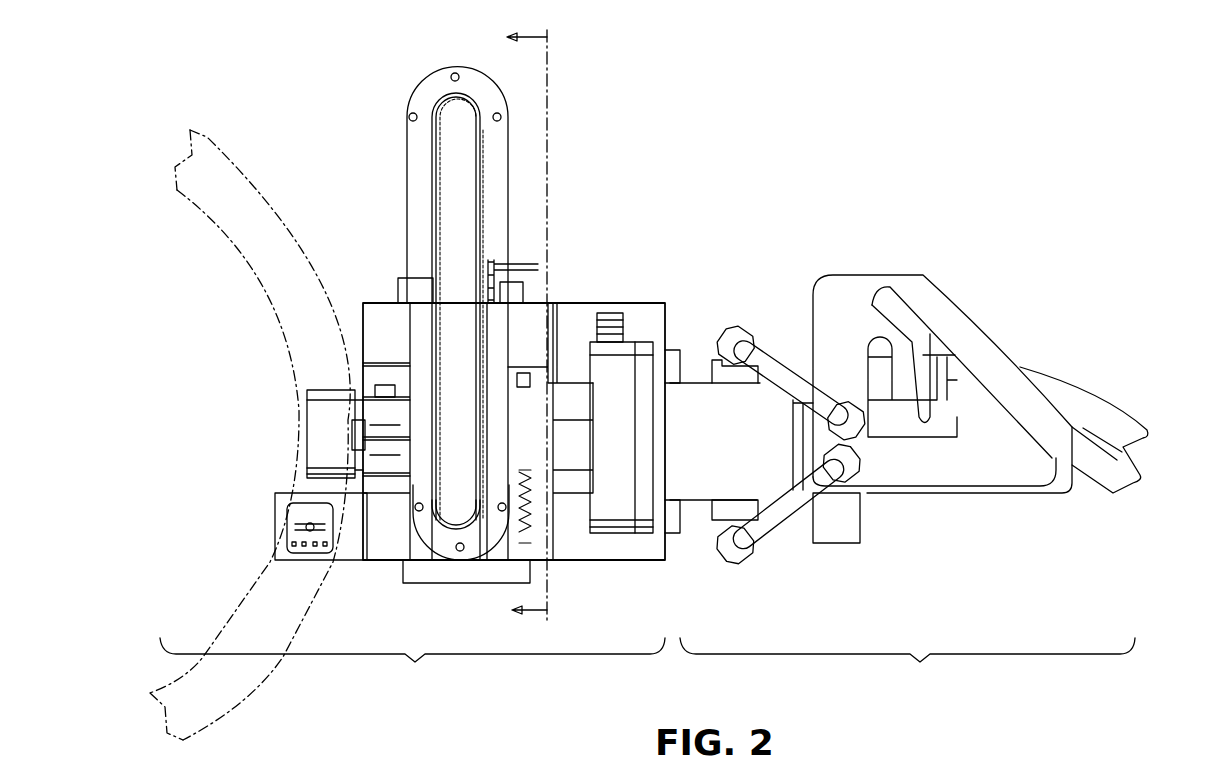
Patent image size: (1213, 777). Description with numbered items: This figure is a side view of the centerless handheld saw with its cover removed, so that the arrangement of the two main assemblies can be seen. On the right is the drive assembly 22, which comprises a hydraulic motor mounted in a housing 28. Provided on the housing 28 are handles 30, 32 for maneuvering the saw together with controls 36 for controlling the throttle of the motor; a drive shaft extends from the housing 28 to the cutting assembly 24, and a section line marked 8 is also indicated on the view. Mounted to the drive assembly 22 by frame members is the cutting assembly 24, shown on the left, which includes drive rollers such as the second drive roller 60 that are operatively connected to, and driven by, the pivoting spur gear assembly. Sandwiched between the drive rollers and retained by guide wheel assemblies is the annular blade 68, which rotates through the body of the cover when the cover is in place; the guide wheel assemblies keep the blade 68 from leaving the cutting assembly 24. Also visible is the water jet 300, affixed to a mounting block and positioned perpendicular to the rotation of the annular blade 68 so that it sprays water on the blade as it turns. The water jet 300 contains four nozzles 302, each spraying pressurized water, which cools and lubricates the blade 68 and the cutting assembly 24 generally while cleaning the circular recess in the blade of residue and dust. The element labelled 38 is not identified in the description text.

The section line 8- 8 is at (538, 325).
The drive assembly 22 is at (902, 528).
The cutting assembly 24 is at (420, 478).
The housing 28 is at (807, 423).
The handle 30 is at (432, 105).
The handle 32 is at (925, 277).
The controls 36 is at (923, 335).
The link rod 38 is at (700, 345).
The second drive roller 60 is at (320, 440).
The annular blade 68 is at (205, 235).
The water jet 300 is at (290, 530).
The nozzles 302 is at (278, 560).